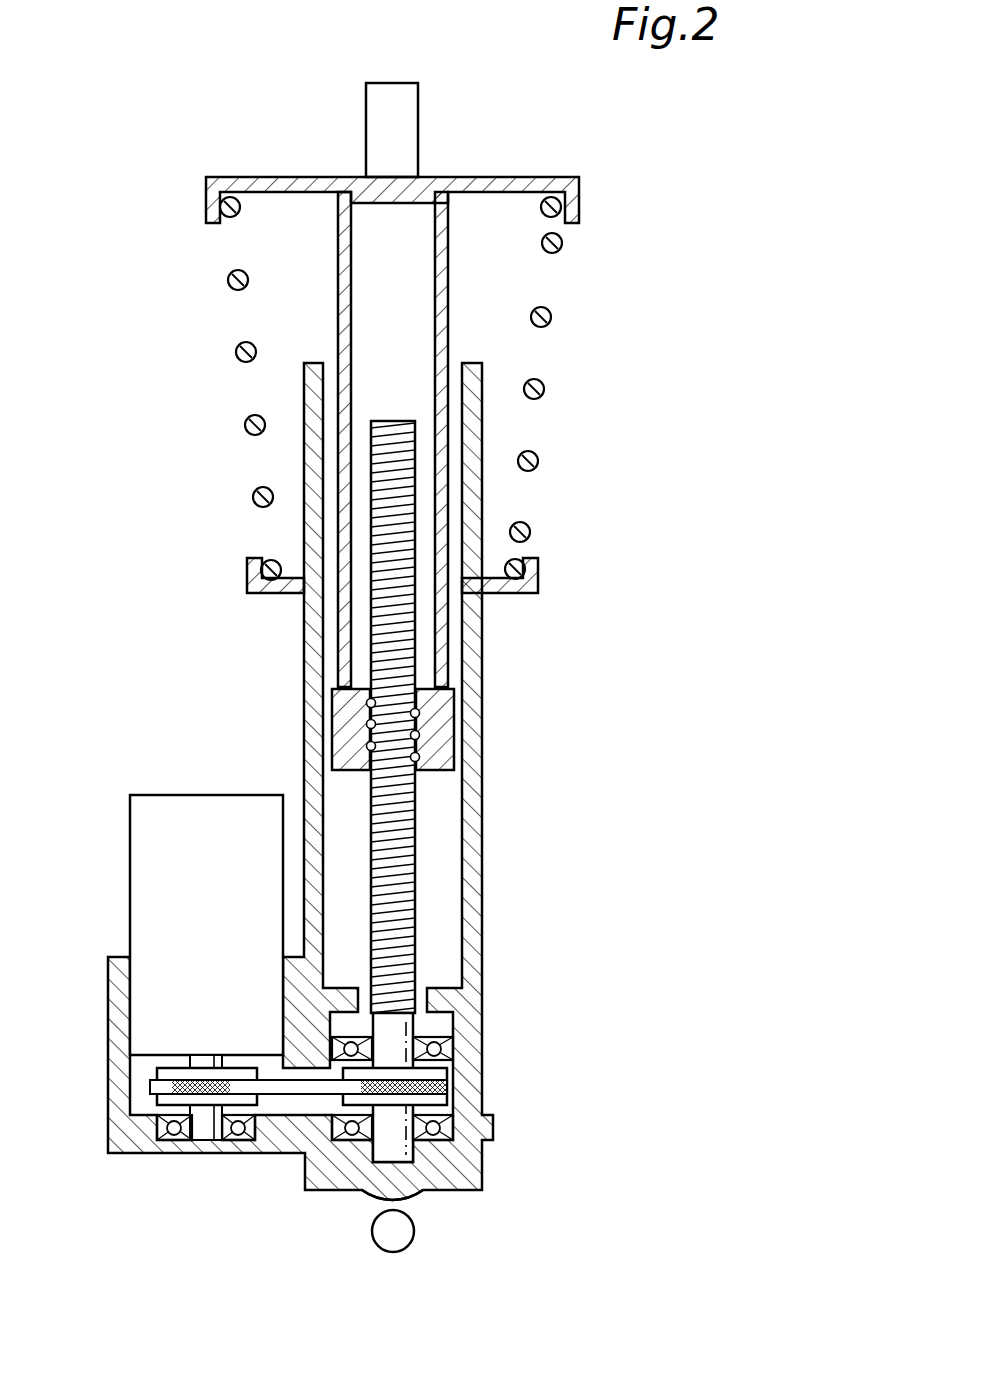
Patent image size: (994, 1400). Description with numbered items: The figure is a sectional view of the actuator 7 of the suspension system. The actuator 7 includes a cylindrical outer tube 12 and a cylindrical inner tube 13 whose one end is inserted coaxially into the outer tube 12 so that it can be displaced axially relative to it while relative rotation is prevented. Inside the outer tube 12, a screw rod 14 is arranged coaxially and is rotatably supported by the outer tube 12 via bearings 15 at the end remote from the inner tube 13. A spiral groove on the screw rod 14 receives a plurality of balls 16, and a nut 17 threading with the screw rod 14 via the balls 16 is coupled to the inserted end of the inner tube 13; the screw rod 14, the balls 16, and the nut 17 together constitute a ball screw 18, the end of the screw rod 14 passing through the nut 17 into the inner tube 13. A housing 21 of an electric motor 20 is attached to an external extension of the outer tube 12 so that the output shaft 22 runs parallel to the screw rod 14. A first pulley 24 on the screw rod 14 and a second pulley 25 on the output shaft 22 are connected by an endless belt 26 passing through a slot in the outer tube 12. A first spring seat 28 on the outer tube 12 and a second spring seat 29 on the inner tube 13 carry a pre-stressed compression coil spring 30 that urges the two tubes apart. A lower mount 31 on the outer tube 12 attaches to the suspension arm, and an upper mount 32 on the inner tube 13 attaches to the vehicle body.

The actuator 7 is at (238, 124).
The outer tube 12 is at (472, 850).
The inner tube 13 is at (440, 266).
The screw rod 14 is at (410, 888).
The bearings 15 is at (446, 1126).
The balls 16 is at (420, 757).
The nut 17 is at (442, 700).
The ball screw 18 is at (440, 783).
The electric motor 20 is at (175, 919).
The housing 21 is at (140, 865).
The output shaft 22 is at (207, 1135).
The first pulley 24 is at (390, 1098).
The second pulley 25 is at (167, 1073).
The endless belt 26 is at (281, 1090).
The first spring seat 28 is at (539, 577).
The second spring seat 29 is at (572, 208).
The compression coil spring 30 is at (541, 387).
The lower mount 31 is at (432, 1257).
The upper mount 32 is at (412, 108).